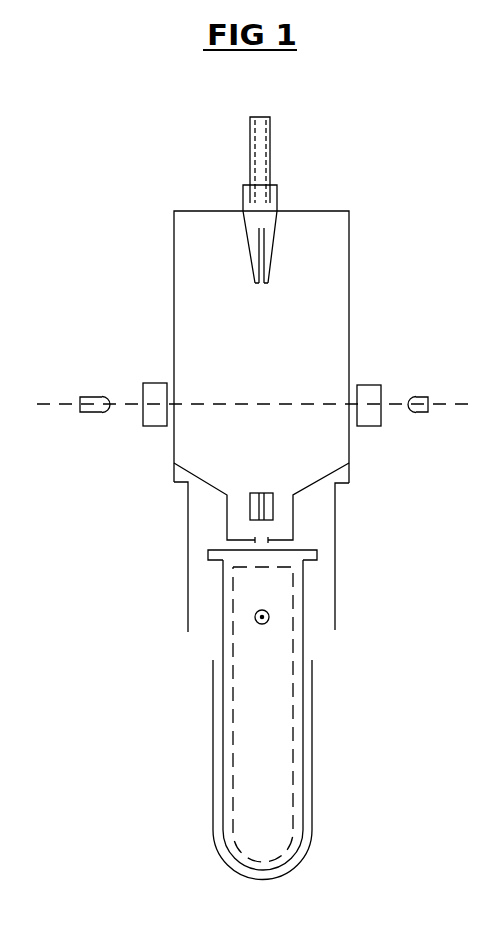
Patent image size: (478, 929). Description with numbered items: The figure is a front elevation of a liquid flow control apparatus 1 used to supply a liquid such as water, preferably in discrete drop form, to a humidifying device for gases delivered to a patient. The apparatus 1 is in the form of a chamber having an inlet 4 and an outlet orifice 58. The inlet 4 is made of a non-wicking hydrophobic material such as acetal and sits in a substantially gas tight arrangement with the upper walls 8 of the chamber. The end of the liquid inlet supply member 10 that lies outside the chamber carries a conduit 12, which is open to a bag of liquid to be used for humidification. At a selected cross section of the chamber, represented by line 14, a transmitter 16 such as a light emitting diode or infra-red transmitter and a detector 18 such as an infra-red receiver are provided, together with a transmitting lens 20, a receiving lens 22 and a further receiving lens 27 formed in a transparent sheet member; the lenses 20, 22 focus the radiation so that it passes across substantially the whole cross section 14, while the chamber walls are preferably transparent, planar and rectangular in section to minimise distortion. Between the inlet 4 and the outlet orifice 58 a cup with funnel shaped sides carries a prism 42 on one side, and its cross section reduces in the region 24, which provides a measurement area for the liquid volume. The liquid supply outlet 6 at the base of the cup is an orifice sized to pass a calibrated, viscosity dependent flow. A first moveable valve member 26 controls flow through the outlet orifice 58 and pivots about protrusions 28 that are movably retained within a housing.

The liquid flow control apparatus 1 is at (130, 193).
The inlet 4 is at (265, 283).
The liquid supply outlet 6 is at (257, 551).
The upper walls 8 is at (297, 210).
The liquid inlet supply member 10 is at (267, 232).
The conduit 12 is at (272, 147).
The selected cross section 14 is at (63, 400).
The transmitter 16 is at (97, 398).
The detector 18 is at (420, 398).
The second part curved surface transmitting lens 20 is at (153, 390).
The first part curved surface receiving lens 22 is at (372, 390).
The reduced region 24 is at (278, 510).
The first moveable valve member 26 is at (297, 598).
The second part curved surface receiving lens 27 is at (323, 520).
The protrusions 28 is at (208, 556).
The prism 42 is at (253, 512).
The outlet orifice 58 is at (257, 622).